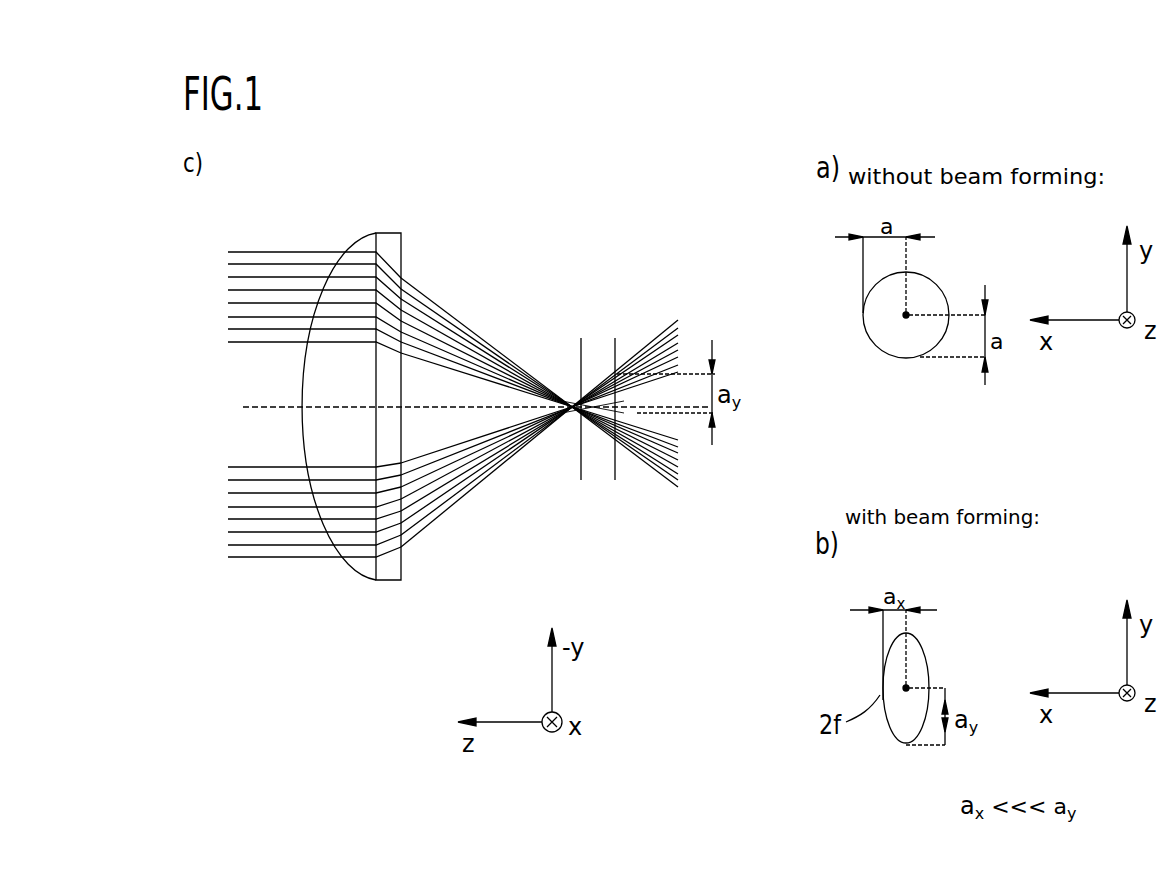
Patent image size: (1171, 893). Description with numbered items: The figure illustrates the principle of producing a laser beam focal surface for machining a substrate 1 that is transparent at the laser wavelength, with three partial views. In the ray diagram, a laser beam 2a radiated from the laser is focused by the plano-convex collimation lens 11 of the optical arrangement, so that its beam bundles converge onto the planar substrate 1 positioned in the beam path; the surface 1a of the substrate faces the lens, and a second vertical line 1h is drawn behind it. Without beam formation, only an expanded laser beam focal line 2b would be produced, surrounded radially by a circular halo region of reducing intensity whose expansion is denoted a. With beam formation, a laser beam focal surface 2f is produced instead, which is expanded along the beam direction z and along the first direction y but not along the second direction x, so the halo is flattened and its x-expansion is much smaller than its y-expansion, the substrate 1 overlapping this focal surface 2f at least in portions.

The substrate 1 is at (600, 396).
The surface of the planar substrate orientated towards the optical arrangement 1a is at (582, 484).
The second plate of beam forming element 1h is at (618, 478).
The laser beam 2a is at (237, 303).
The laser beam focal line 2b is at (876, 334).
The laser beam focal surface 2f is at (594, 440).
The plano-convex collimation lens 11 is at (390, 233).